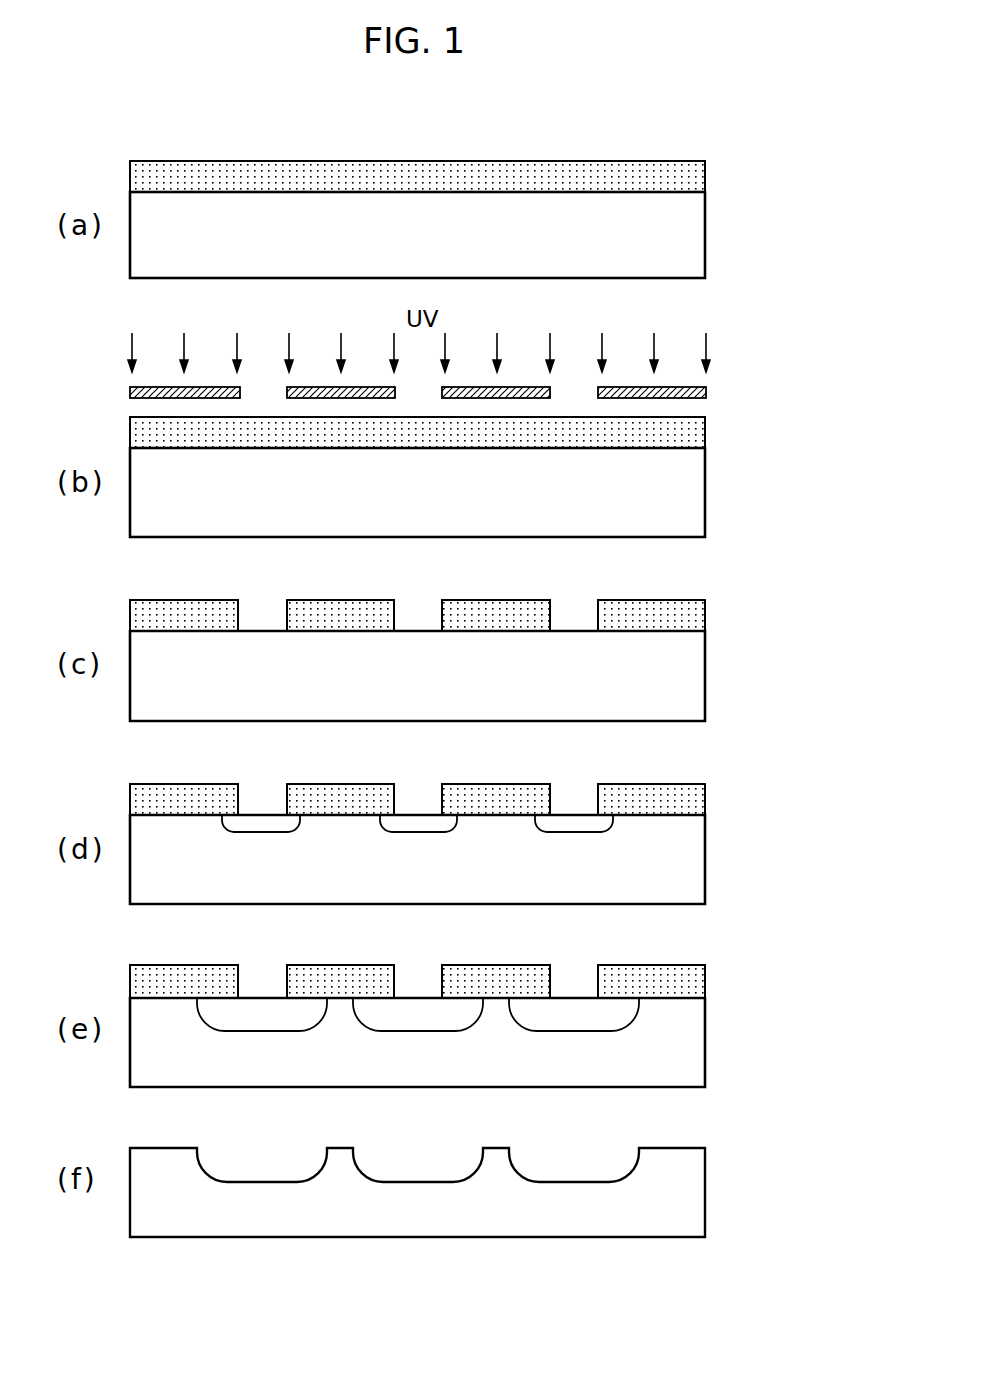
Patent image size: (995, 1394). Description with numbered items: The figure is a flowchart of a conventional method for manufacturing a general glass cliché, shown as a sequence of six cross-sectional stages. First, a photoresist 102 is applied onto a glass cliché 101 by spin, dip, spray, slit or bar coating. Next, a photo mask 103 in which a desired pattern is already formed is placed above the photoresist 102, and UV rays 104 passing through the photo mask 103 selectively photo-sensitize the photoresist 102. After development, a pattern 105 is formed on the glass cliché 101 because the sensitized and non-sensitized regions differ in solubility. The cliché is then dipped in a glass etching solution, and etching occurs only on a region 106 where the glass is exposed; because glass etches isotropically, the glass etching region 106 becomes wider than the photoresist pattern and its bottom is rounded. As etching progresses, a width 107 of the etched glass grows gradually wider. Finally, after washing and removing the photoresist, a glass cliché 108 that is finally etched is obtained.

The glass cliché 101 is at (705, 238).
The photoresist 102 is at (705, 178).
The photo mask 103 is at (706, 394).
The UV rays 104 is at (706, 350).
The pattern 105 is at (573, 598).
The glass etching region 106 is at (573, 781).
The width of the etched glass cliché 107 is at (573, 961).
The finally etched glass cliché 108 is at (705, 1195).